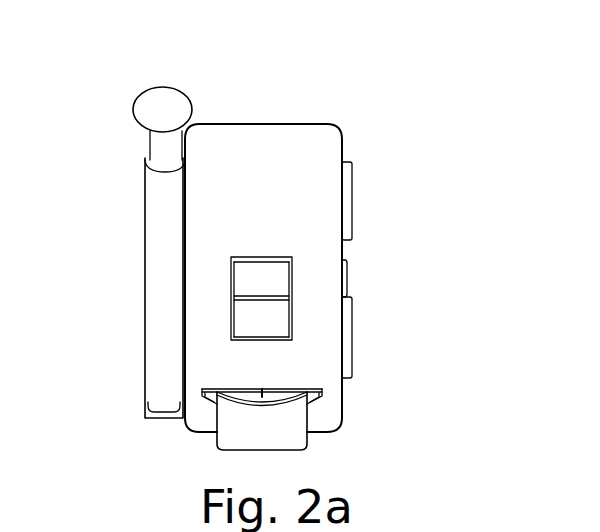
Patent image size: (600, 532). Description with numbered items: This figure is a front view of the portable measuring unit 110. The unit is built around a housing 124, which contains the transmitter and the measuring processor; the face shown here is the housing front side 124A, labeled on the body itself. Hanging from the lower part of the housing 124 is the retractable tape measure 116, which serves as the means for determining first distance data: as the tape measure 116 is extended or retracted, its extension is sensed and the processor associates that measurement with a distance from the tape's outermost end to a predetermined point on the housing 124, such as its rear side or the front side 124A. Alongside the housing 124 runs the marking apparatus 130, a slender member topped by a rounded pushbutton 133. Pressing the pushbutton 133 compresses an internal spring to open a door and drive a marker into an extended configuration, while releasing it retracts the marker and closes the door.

The portable measuring unit 110 is at (287, 243).
The housing 124 is at (268, 248).
The housing front side 124A is at (305, 201).
The marking apparatus 130 is at (125, 232).
The pushbutton 133 is at (137, 100).
The retractable tape measure 116 is at (290, 433).